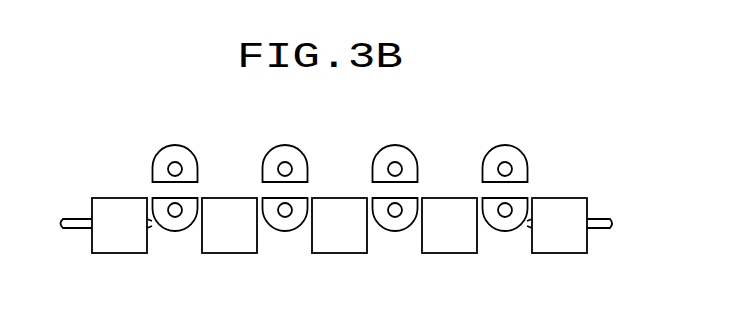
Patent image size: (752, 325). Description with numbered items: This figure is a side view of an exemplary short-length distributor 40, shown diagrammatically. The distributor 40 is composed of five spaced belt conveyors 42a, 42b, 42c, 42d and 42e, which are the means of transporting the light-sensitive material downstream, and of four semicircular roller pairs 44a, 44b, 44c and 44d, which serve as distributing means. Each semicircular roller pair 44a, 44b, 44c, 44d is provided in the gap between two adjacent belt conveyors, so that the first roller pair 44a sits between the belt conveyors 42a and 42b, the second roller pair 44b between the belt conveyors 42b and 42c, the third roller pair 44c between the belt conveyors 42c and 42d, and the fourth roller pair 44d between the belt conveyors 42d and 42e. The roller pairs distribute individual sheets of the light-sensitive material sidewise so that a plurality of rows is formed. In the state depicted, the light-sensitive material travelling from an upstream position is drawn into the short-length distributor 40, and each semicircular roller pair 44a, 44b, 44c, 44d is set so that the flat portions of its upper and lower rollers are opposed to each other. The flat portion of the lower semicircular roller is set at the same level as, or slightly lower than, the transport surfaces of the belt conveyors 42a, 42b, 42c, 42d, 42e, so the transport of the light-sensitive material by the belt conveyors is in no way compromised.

The short-length distributor 40 is at (572, 167).
The belt conveyor 42a is at (118, 240).
The belt conveyor 42b is at (228, 240).
The belt conveyor 42c is at (343, 240).
The belt conveyor 42d is at (452, 240).
The belt conveyor 42e is at (564, 240).
The semicircular roller pair 44a is at (143, 158).
The semicircular roller pair 44b is at (253, 158).
The semicircular roller pair 44c is at (358, 158).
The semicircular roller pair 44d is at (468, 158).